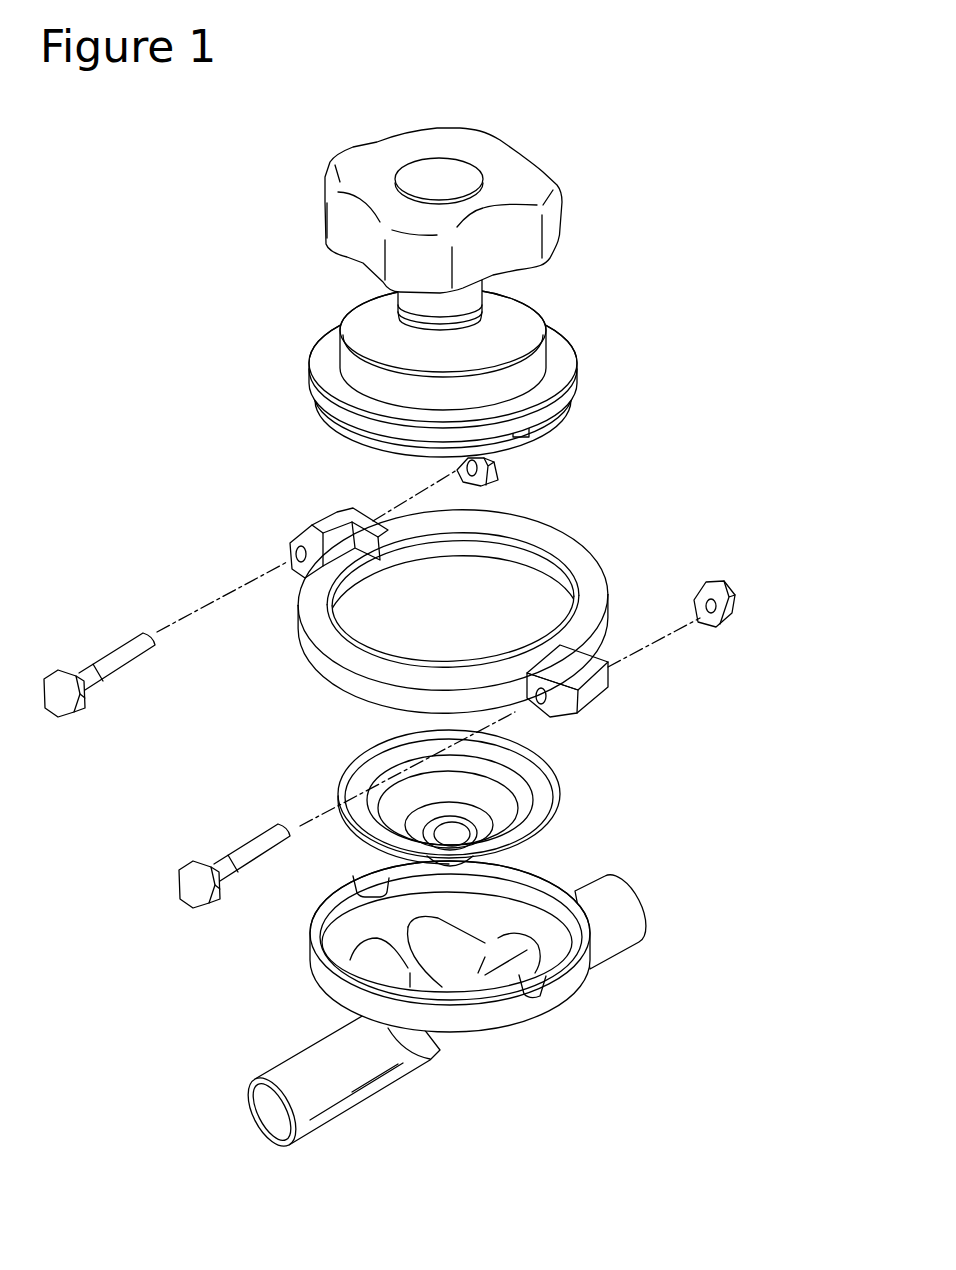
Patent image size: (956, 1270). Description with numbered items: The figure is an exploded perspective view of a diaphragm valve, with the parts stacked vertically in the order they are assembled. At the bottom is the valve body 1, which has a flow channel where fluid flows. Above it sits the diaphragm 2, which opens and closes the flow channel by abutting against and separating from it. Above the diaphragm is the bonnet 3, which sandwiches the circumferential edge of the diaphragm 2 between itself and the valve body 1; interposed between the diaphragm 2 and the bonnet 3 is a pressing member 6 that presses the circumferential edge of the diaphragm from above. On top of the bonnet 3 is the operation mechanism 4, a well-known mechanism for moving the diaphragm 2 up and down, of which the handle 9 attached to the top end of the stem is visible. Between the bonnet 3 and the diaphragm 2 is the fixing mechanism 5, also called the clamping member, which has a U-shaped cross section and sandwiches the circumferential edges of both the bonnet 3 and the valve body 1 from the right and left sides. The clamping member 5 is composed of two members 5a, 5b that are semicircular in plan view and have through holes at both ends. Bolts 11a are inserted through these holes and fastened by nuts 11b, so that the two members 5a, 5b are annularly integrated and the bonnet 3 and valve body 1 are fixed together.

The valve body 1 is at (617, 957).
The diaphragm 2 is at (557, 813).
The bonnet 3 is at (533, 307).
The operation mechanism 4 is at (523, 160).
The fixing mechanism 5 is at (513, 650).
The member 5a is at (607, 683).
The member 5b is at (683, 698).
The pressing member 6 is at (547, 437).
The handle 9 is at (330, 167).
The bolts 11a is at (52, 674).
The nuts 11b is at (503, 468).